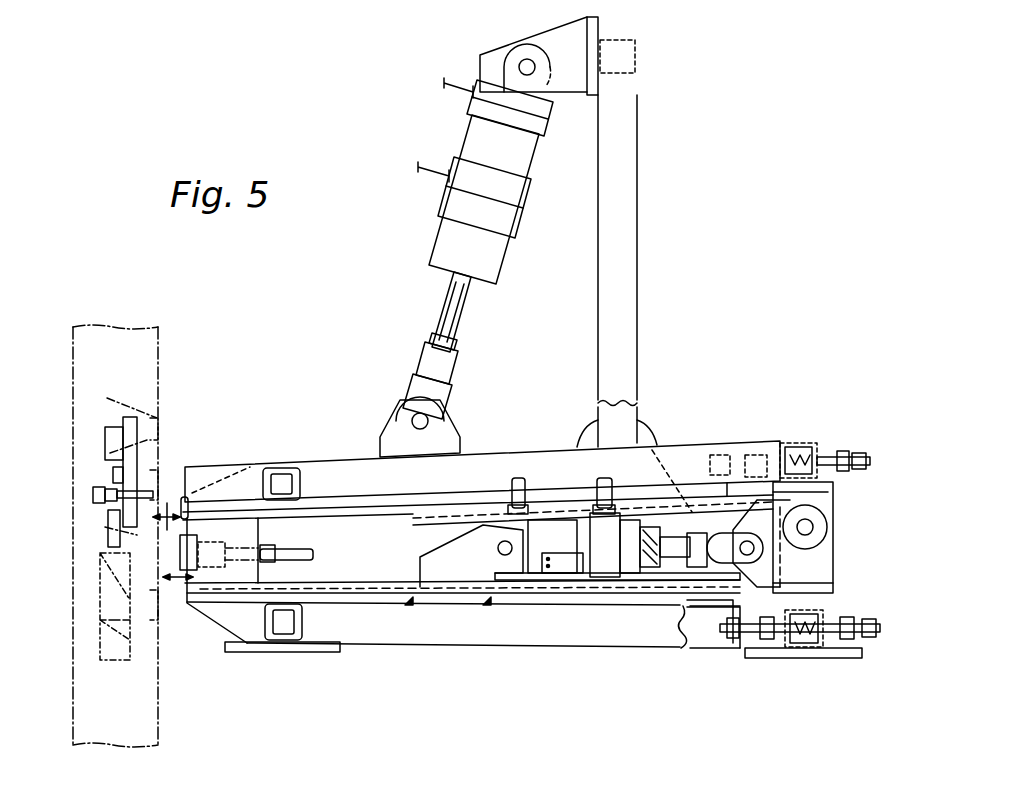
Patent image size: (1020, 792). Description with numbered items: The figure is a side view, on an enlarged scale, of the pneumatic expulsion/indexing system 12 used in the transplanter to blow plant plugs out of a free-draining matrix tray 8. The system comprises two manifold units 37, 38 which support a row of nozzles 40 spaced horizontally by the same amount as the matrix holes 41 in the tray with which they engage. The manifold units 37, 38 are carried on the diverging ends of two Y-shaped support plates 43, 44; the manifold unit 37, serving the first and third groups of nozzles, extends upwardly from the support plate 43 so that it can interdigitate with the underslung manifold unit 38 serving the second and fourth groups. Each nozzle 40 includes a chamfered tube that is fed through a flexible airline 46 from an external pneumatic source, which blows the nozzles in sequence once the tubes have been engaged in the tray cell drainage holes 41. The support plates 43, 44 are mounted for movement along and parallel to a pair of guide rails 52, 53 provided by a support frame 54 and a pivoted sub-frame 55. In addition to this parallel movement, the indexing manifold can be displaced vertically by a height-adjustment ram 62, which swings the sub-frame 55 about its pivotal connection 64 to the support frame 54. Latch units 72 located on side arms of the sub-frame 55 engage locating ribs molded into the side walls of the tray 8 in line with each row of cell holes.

The free-draining matrix tray 8 is at (158, 345).
The expulsion/indexing system 12 is at (726, 250).
The manifold unit 37 is at (184, 497).
The manifold unit 38 is at (110, 498).
The nozzle 40 is at (95, 491).
The matrix hole 41 is at (160, 418).
The support plate 43 is at (372, 592).
The support plate 44 is at (337, 510).
The flexible airline 46 is at (307, 552).
The guide rail 52 is at (505, 592).
The guide rail 53 is at (547, 480).
The support frame 54 is at (597, 672).
The pivoted sub-frame 55 is at (722, 412).
The height-adjustment ram 62 is at (482, 133).
The pivotal connection 64 is at (808, 528).
The latch unit 72 is at (107, 414).